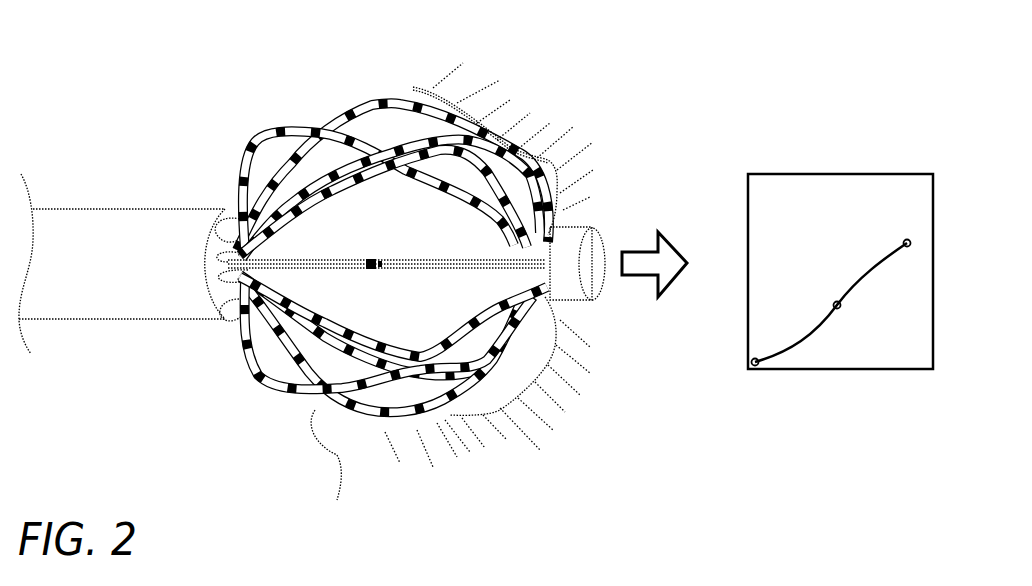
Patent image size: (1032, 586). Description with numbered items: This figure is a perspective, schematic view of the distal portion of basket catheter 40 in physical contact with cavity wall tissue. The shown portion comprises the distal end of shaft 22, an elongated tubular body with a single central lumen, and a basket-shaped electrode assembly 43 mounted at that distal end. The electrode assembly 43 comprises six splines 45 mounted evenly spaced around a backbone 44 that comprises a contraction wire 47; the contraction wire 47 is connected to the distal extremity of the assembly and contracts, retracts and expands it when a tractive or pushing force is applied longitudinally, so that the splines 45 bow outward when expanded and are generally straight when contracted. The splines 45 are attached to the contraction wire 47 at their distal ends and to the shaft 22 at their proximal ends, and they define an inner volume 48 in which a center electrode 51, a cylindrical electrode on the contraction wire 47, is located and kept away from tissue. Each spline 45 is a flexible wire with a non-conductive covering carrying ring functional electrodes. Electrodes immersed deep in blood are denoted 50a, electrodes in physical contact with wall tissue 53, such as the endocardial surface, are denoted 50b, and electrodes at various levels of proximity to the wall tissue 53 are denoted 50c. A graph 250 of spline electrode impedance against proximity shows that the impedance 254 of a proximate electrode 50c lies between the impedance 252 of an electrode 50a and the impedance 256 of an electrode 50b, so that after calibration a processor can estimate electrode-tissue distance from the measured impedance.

The basket catheter 40 is at (470, 269).
The shaft 22 is at (131, 208).
The basket-shaped electrode assembly 43 is at (573, 269).
The backbone 44 is at (416, 263).
The splines 45 is at (275, 292).
The contraction wire 47 is at (480, 262).
The inner volume 48 is at (443, 303).
The center electrode 51 is at (376, 270).
The functional electrodes immersed deep in blood 50a is at (398, 106).
The functional electrodes in physical contact with wall tissue 50b is at (510, 152).
The functional electrodes in proximity to wall tissue 50c is at (363, 420).
The wall tissue 53 is at (580, 150).
The graph 250 is at (820, 306).
The impedance of an electrode deep in blood 252 is at (907, 247).
The impedance of an electrode in proximity to tissue 254 is at (838, 308).
The impedance of an electrode in contact with tissue 256 is at (756, 360).